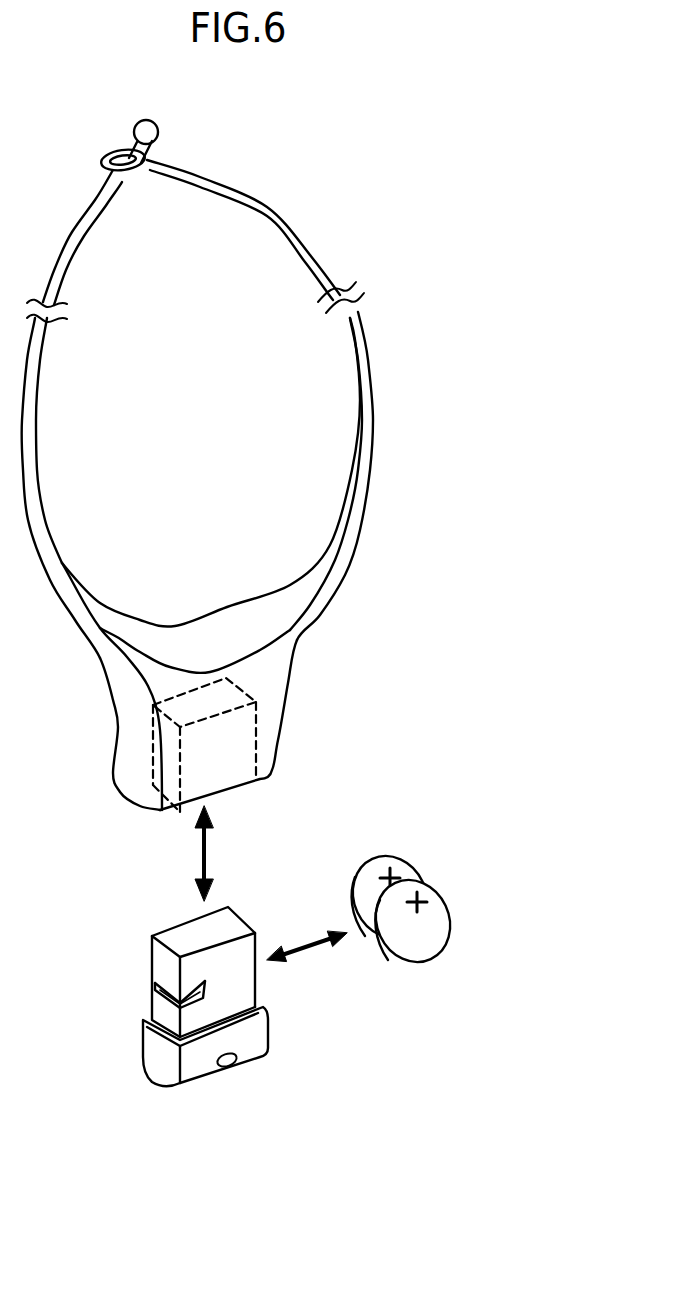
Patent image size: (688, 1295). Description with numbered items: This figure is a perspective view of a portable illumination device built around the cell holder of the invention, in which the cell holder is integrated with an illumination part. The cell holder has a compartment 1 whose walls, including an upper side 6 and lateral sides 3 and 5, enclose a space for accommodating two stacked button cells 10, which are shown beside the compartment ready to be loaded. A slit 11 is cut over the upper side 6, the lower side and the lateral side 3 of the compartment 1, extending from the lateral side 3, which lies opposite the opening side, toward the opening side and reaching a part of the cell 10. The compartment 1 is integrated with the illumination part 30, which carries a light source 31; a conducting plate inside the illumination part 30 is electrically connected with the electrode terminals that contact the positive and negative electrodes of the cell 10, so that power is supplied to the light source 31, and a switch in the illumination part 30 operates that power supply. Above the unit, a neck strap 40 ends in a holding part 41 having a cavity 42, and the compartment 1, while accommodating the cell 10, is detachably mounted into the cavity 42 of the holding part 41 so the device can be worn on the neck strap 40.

The compartment 1 is at (189, 939).
The lateral side 3 is at (160, 1000).
The lateral side 5 is at (177, 937).
The upper side 6 is at (245, 983).
The cell 10 is at (412, 867).
The slit 11 is at (152, 972).
The illumination part 30 is at (244, 1073).
The light source 31 is at (229, 1066).
The neck strap 40 is at (264, 203).
The holding part 41 is at (290, 687).
The cavity 42 is at (240, 742).